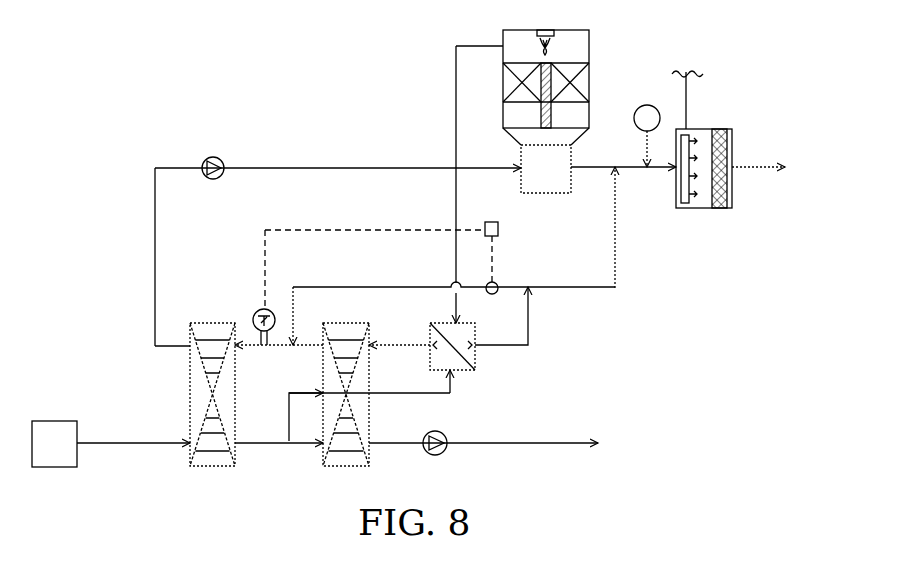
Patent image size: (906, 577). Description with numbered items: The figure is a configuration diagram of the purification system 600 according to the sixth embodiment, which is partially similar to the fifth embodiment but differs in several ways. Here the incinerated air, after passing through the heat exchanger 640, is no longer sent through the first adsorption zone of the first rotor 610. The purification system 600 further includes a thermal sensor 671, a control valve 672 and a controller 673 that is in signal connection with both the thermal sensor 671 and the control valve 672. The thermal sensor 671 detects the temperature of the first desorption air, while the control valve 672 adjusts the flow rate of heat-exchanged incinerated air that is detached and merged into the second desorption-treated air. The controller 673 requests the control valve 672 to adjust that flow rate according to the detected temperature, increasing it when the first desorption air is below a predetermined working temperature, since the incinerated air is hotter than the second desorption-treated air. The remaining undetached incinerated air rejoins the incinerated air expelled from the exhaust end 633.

The purification system 600 is at (119, 42).
The first rotor 610 is at (191, 392).
The exhaust end 633 is at (571, 170).
The heat exchanger 640 is at (475, 368).
The thermal sensor 671 is at (259, 308).
The control valve 672 is at (492, 295).
The controller 673 is at (498, 226).